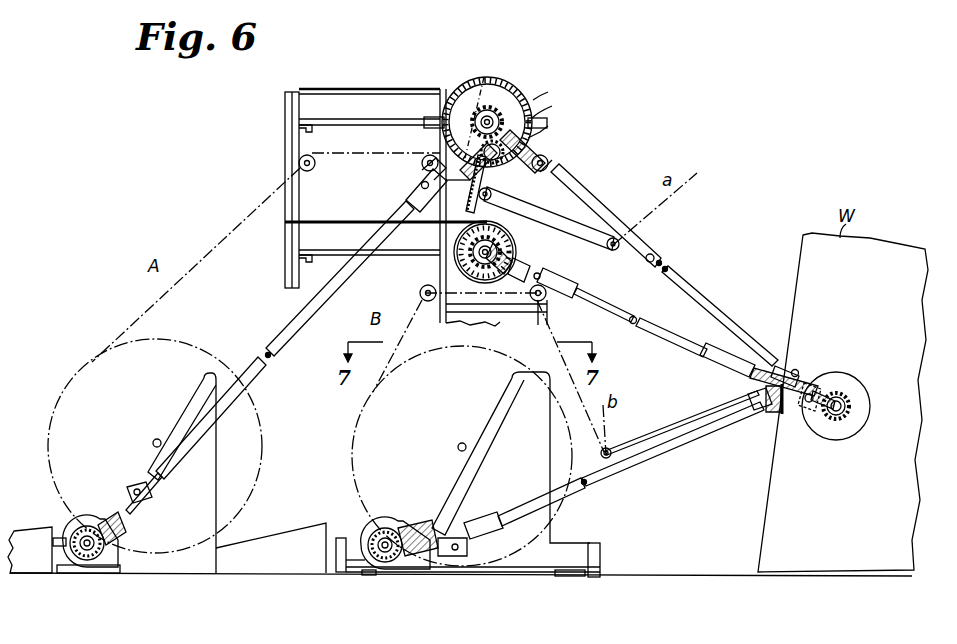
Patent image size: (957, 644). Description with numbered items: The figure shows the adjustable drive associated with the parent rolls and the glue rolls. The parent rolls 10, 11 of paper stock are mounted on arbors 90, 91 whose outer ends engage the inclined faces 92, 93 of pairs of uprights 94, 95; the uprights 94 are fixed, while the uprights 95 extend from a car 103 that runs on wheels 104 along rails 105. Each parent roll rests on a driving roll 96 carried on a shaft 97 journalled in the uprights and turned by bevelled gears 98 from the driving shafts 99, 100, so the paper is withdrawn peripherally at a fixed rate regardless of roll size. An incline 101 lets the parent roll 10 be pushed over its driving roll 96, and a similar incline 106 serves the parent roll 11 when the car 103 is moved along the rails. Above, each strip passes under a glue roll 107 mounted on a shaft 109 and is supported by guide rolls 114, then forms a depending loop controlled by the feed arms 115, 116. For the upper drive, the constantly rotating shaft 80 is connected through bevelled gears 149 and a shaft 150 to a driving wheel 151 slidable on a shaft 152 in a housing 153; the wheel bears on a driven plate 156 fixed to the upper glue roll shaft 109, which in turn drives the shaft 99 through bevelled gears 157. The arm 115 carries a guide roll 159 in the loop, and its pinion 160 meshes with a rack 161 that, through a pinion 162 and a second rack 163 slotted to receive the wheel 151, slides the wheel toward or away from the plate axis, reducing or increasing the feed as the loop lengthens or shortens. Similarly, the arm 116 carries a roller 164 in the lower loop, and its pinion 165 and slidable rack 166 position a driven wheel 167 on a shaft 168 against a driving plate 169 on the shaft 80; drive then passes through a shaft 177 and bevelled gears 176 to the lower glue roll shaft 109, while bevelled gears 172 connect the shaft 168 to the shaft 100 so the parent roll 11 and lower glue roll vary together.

The parent roll 10 is at (165, 340).
The parent roll 11 is at (478, 348).
The shaft 80 is at (843, 412).
The arbor 90 is at (153, 443).
The arbor 91 is at (458, 447).
The inclined face 92 is at (190, 406).
The inclined face 93 is at (488, 420).
The upright 94 is at (193, 473).
The upright 95 is at (543, 457).
The driving roll 96 is at (124, 530).
The shaft 97 is at (80, 560).
The bevelled gears 98 is at (78, 518).
The driving shaft 99 is at (276, 345).
The driving shaft 100 is at (670, 450).
The incline 101 is at (30, 550).
The car 103 is at (515, 568).
The wheels 104 is at (340, 576).
The rails 105 is at (368, 575).
The incline 106 is at (298, 523).
The glue roll 107 is at (462, 88).
The shaft 109 is at (505, 100).
The guide roll 114 is at (470, 184).
The feed arm 115 is at (588, 236).
The feed arm 116 is at (680, 418).
The bevelled gears 149 is at (838, 398).
The shaft 150 is at (700, 290).
The driving wheel 151 is at (554, 103).
The shaft 152 is at (552, 127).
The housing 153 is at (555, 79).
The driven plate 156 is at (498, 105).
The bevelled gears 157 is at (484, 103).
The guide roll 159 is at (658, 240).
The pinion 160 is at (545, 197).
The rack 161 is at (466, 205).
The pinion 162 is at (592, 170).
The rack 163 is at (536, 155).
The roller 164 is at (606, 458).
The pinion 165 is at (772, 346).
The rack 166 is at (800, 412).
The driven wheel 167 is at (814, 394).
The shaft 168 is at (800, 368).
The driving plate 169 is at (870, 408).
The bevelled gears 172 is at (768, 415).
The bevelled gears 176 is at (465, 266).
The shaft 177 is at (680, 330).